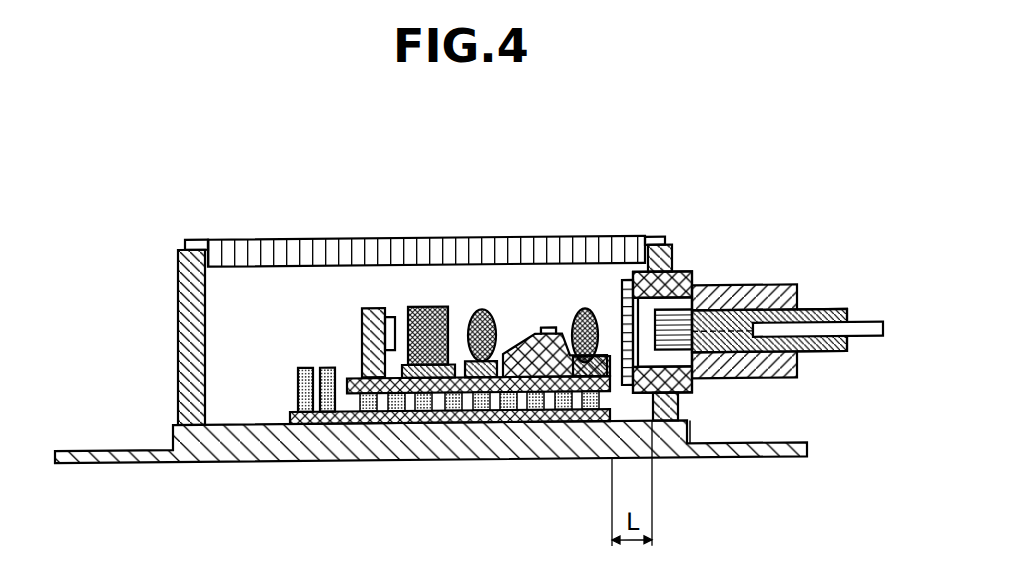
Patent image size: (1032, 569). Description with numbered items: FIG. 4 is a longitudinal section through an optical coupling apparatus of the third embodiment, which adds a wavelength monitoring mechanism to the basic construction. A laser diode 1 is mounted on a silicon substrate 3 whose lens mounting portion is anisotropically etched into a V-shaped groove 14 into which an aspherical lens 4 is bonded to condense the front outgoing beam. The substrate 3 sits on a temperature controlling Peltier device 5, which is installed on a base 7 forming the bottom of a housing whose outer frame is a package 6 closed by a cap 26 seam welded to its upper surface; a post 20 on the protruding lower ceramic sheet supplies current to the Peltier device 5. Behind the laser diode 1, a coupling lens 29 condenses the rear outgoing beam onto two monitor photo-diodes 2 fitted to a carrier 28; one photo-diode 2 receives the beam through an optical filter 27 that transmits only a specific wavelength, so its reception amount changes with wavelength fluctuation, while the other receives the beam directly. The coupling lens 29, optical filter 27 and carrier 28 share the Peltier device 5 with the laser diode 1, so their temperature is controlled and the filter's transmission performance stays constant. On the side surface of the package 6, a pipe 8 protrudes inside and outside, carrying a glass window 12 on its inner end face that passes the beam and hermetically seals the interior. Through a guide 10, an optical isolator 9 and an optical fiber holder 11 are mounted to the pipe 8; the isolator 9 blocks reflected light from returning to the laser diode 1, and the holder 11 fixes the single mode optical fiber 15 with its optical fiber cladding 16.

The laser diode 1 is at (548, 329).
The monitor photo-diode 2 is at (392, 317).
The substrate 3 is at (520, 347).
The aspherical lens 4 is at (587, 311).
The Peltier device 5 is at (452, 386).
The package 6 is at (178, 297).
The base 7 is at (270, 443).
The pipe 8 is at (676, 275).
The optical isolator 9 is at (672, 342).
The guide 10 is at (763, 290).
The optical fiber holder 11 is at (817, 314).
The glass window 12 is at (625, 390).
The V-shaped groove 14 is at (523, 408).
The optical fiber 15 is at (718, 330).
The optical fiber cladding 16 is at (855, 336).
The post 20 is at (296, 388).
The cap 26 is at (280, 238).
The optical filter 27 is at (428, 307).
The carrier 28 is at (372, 308).
The coupling lens 29 is at (483, 310).